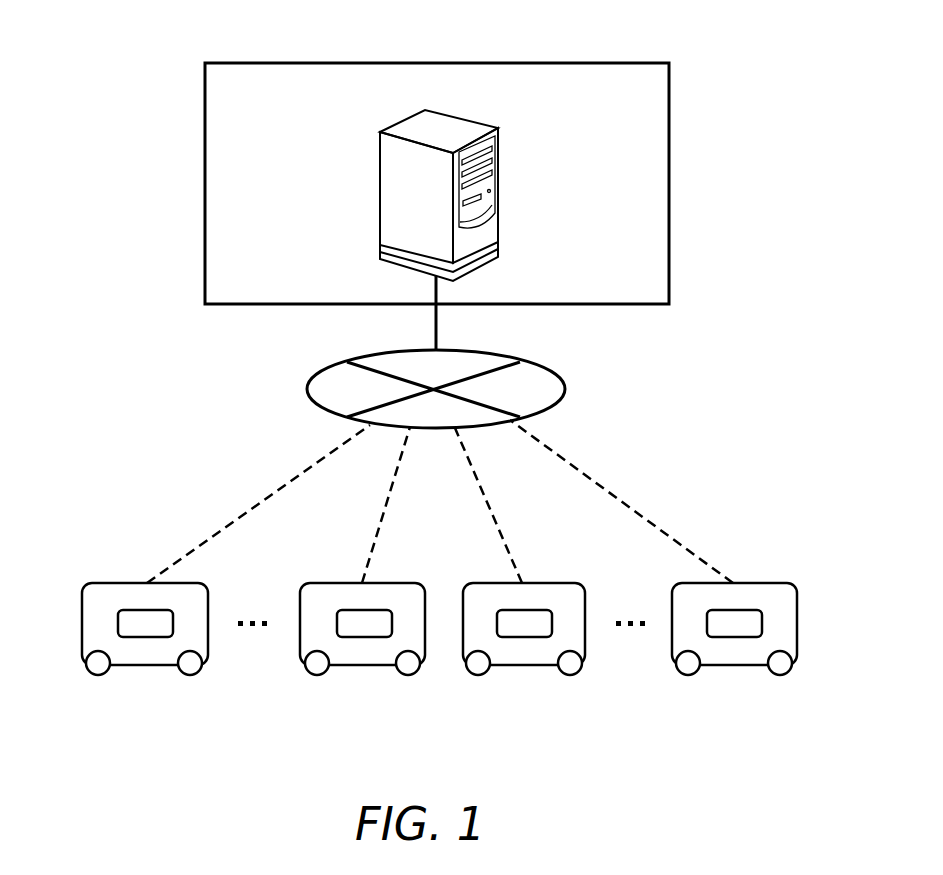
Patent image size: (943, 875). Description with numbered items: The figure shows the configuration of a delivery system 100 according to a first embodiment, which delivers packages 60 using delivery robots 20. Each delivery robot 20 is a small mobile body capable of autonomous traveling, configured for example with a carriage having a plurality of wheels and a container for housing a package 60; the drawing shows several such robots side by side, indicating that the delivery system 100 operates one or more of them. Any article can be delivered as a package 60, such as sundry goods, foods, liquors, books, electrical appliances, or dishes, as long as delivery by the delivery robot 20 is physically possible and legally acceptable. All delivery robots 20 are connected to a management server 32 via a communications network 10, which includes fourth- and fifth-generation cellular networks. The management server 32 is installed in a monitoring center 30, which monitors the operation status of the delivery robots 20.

The delivery system 100 is at (137, 143).
The monitoring center 30 is at (283, 63).
The management server 32 is at (380, 190).
The communications network 10 is at (330, 366).
The delivery robot 20 is at (118, 583).
The package 60 is at (175, 612).